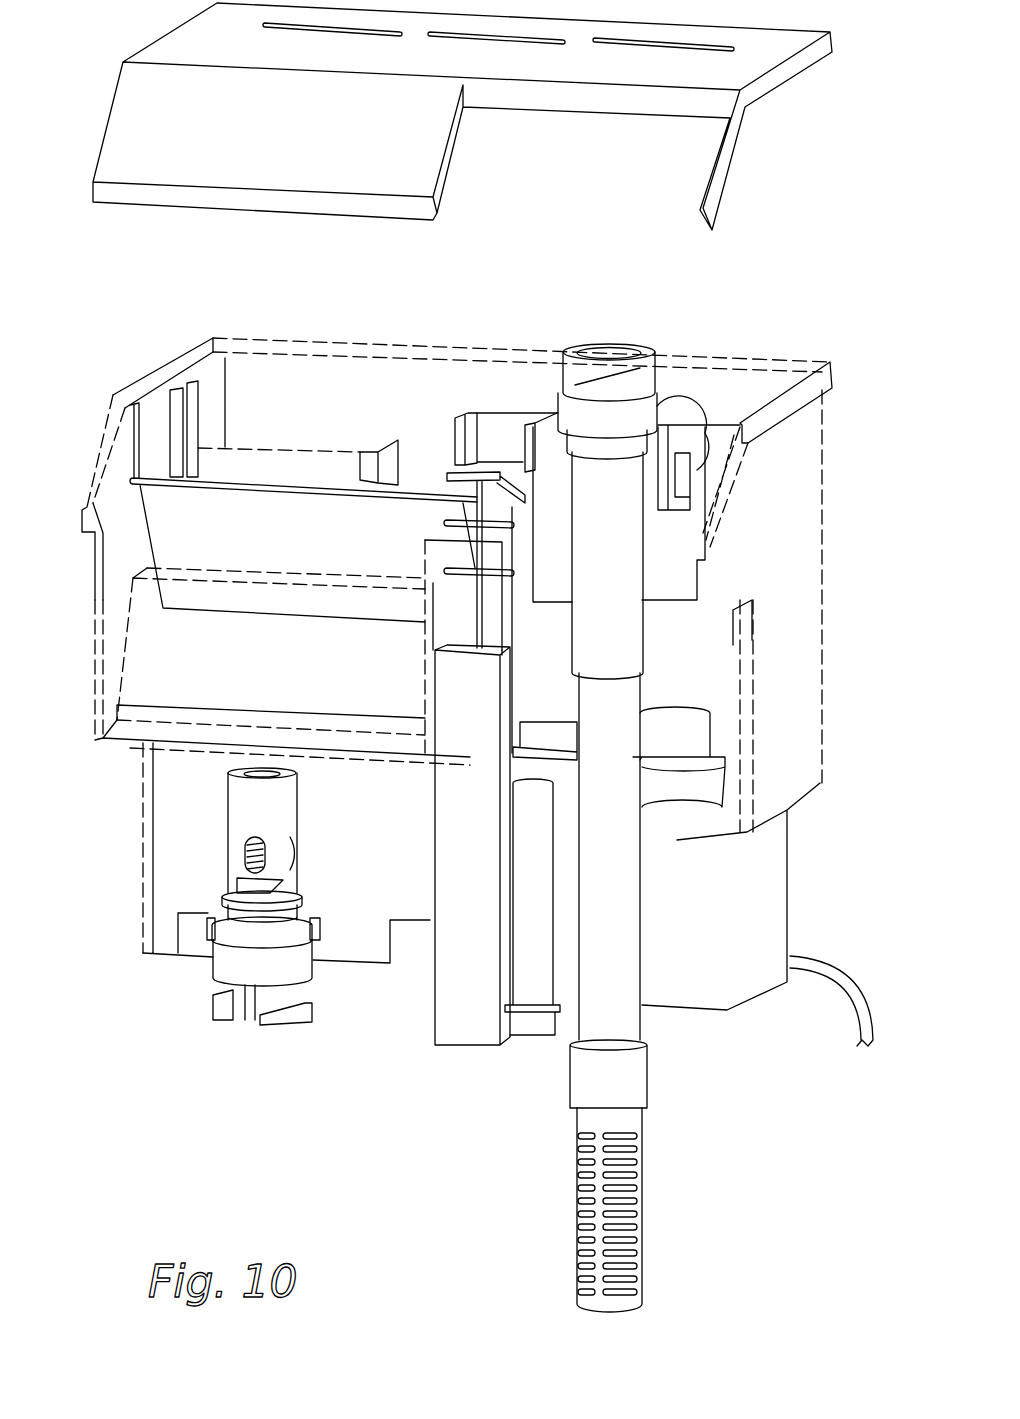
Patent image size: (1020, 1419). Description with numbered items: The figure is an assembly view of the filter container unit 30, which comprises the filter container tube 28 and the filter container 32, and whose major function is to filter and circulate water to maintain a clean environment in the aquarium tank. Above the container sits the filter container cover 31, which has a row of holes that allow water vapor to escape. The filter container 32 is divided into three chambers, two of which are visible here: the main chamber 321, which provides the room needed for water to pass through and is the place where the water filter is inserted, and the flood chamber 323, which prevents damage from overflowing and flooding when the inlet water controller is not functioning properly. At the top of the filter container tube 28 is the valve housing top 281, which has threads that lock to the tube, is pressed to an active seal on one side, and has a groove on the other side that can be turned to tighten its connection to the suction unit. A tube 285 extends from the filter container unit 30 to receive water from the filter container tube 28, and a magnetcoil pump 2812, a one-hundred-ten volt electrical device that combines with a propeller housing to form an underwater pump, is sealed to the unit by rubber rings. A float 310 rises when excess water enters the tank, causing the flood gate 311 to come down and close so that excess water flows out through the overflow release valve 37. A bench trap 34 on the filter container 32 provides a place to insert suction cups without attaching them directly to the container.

The filter container cover 31 is at (803, 77).
The filter container 32 is at (457, 551).
The filter container unit 30 is at (832, 628).
The flood gate 311 is at (155, 525).
The flood chamber 323 is at (303, 430).
The main chamber 321 is at (428, 452).
The valve housing top 281 is at (633, 345).
The tube 285 is at (707, 575).
The float 310 is at (442, 678).
The overflow release valve 37 is at (227, 815).
The magnetcoil pump 2812 is at (788, 874).
The filter container tube 28 is at (642, 940).
The bench trap 34 is at (405, 970).